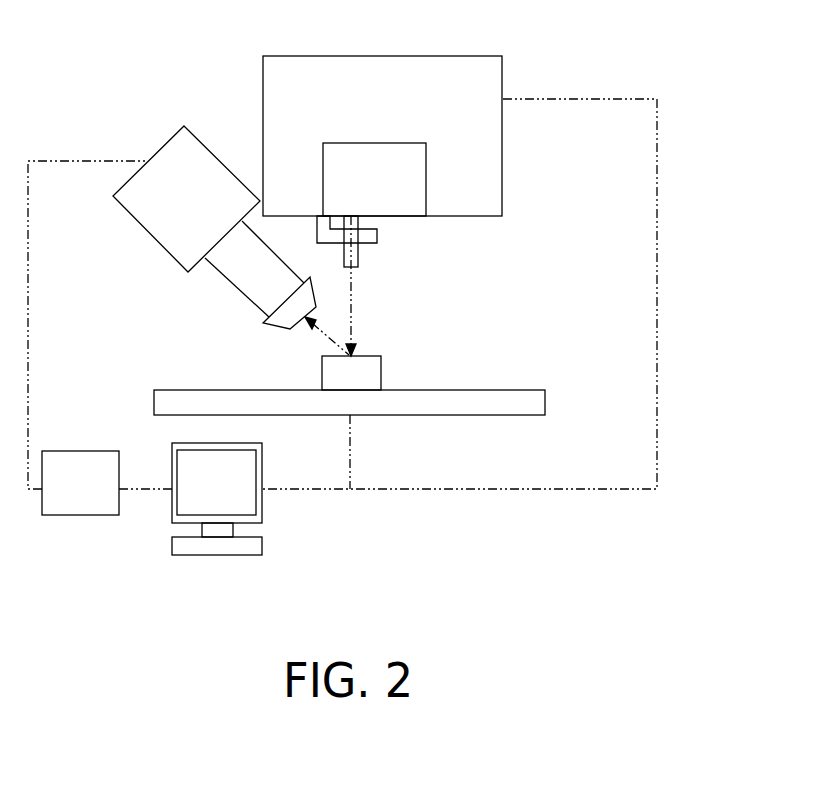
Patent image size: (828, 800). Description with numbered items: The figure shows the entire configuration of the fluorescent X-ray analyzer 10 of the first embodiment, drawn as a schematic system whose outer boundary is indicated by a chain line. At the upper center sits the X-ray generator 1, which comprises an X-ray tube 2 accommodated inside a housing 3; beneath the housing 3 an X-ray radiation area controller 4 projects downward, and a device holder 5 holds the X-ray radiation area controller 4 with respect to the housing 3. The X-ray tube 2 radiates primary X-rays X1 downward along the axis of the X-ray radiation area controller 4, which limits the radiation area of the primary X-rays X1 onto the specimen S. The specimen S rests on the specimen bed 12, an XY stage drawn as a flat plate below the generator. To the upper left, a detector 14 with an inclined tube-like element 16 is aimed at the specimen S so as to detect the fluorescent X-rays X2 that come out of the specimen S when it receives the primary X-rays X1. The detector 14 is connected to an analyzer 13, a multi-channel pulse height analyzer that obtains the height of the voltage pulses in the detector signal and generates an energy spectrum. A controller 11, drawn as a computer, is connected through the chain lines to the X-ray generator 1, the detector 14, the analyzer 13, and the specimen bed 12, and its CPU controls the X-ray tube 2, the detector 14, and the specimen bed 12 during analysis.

The X-ray generator 1 is at (421, 168).
The X-ray tube 2 is at (402, 143).
The housing 3 is at (503, 130).
The X-ray radiation area controller 4 is at (358, 250).
The device holder 5 is at (390, 232).
The fluorescent X-ray analyzer 10 is at (689, 128).
The controller 11 is at (262, 543).
The specimen bed 12 is at (512, 390).
The analyzer 13 is at (80, 515).
The detector 14 is at (160, 247).
The lens tube 16 is at (283, 333).
The specimen S is at (372, 356).
The primary X-rays X1 is at (352, 308).
The fluorescent X-rays X2 is at (318, 337).